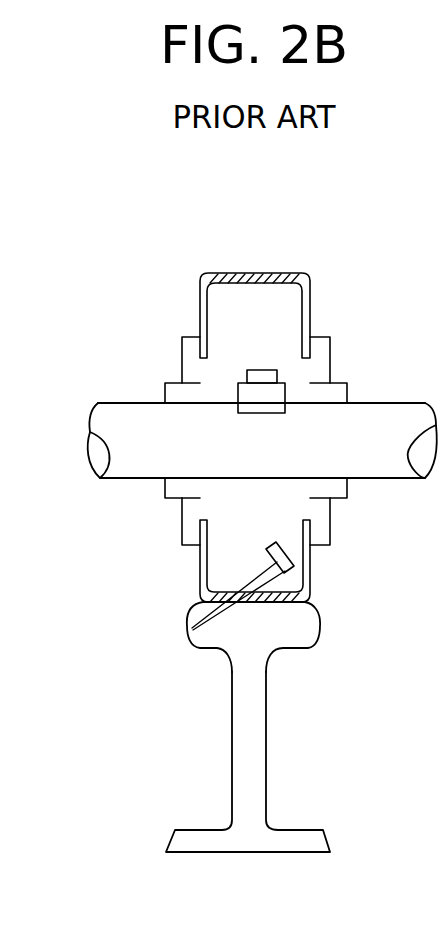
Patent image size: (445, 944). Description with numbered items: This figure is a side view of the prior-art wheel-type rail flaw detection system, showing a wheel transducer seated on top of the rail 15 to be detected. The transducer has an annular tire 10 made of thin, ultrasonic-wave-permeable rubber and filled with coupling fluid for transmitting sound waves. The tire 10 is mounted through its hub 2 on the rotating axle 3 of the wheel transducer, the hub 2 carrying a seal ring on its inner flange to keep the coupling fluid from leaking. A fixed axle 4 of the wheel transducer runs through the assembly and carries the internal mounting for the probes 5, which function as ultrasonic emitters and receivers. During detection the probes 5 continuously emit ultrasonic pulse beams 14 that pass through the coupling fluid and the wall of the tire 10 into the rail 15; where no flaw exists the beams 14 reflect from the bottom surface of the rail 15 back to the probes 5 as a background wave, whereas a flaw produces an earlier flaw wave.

The tire 10 is at (305, 290).
The hub 2 is at (322, 357).
The rotating axle 3 is at (333, 393).
The fixed axle 4 is at (359, 465).
The probes 5 is at (265, 378).
The ultrasonic pulse beams 14 is at (202, 620).
The rail 15 is at (245, 813).